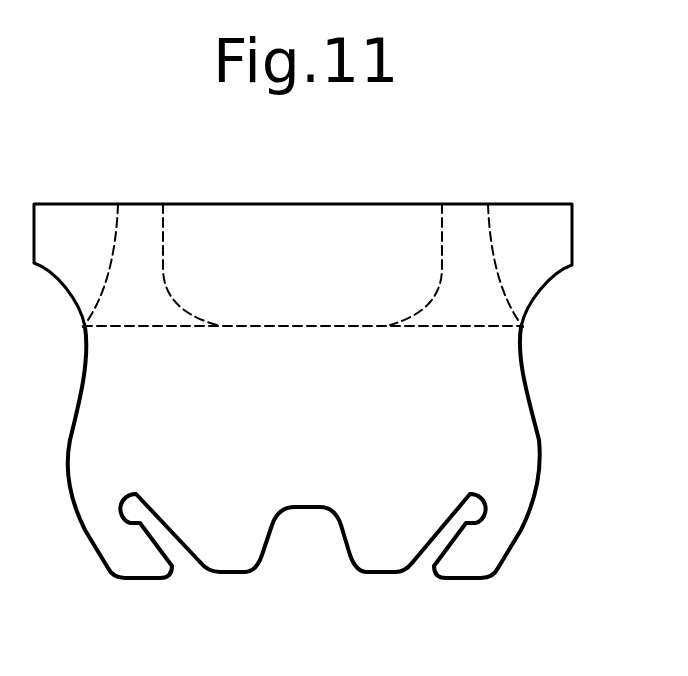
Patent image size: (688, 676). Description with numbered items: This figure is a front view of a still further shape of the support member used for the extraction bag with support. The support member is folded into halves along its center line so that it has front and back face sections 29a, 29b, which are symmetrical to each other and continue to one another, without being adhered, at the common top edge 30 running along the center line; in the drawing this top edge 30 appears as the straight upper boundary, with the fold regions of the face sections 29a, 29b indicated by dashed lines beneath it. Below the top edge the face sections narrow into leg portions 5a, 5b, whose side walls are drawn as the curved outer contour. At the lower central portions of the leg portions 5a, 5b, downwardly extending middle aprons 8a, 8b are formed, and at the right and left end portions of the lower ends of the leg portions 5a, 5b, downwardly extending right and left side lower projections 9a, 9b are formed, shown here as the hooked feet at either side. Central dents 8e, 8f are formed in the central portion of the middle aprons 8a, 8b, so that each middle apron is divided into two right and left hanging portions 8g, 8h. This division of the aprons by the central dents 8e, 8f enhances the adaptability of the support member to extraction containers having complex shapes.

The top edge 30 is at (362, 204).
The front face section 29a is at (328, 216).
The back face section 29b is at (574, 133).
The leg portion 5a is at (346, 482).
The leg portion 5b is at (488, 380).
The middle apron 8a is at (224, 598).
The middle apron 8b is at (223, 560).
The central dent 8e is at (306, 568).
The central dent 8f is at (300, 532).
The hanging portion 8g is at (420, 597).
The hanging portion 8h is at (387, 557).
The right side lower projection 9a is at (513, 537).
The left side lower projection 9b is at (477, 558).